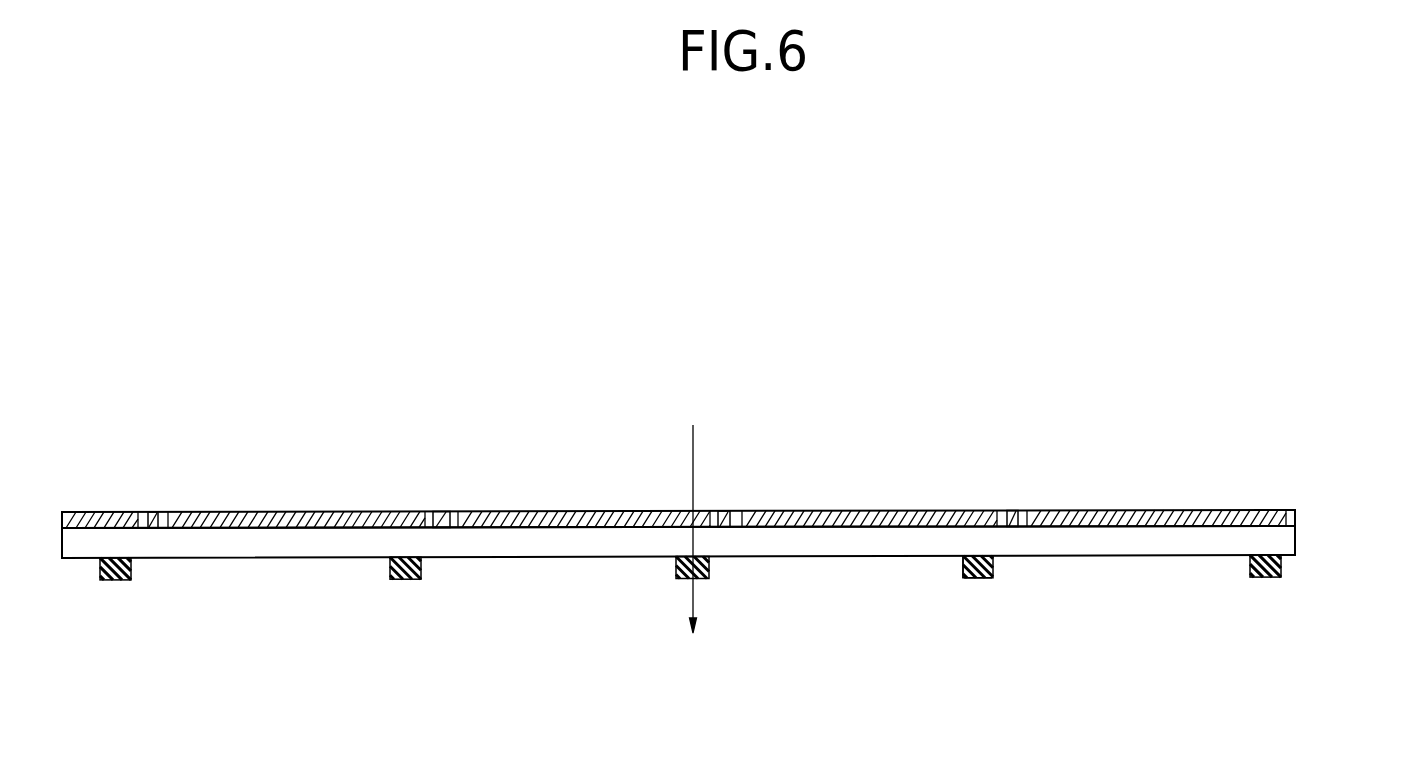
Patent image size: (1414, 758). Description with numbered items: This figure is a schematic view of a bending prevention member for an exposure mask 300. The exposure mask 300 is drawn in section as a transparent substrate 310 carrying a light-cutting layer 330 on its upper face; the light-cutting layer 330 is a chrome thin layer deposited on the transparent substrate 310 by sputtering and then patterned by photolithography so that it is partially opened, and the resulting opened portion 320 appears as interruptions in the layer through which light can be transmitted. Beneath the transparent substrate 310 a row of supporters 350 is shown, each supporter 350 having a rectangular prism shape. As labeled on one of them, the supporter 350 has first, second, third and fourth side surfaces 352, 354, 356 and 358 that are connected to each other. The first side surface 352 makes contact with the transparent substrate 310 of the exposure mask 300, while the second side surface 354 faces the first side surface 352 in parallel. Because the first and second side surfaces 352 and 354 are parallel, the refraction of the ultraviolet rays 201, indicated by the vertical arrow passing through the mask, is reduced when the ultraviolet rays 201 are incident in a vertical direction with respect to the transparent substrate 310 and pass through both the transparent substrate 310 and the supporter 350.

The ultraviolet rays 201 is at (693, 452).
The exposure mask 300 is at (461, 421).
The transparent substrate 310 is at (1285, 539).
The opened portion 320 is at (1018, 517).
The light-cutting layer 330 is at (1203, 512).
The supporter 350 is at (1256, 584).
The first side surface 352 is at (993, 563).
The second side surface 354 is at (963, 563).
The third side surface 356 is at (978, 553).
The fourth side surface 358 is at (978, 578).